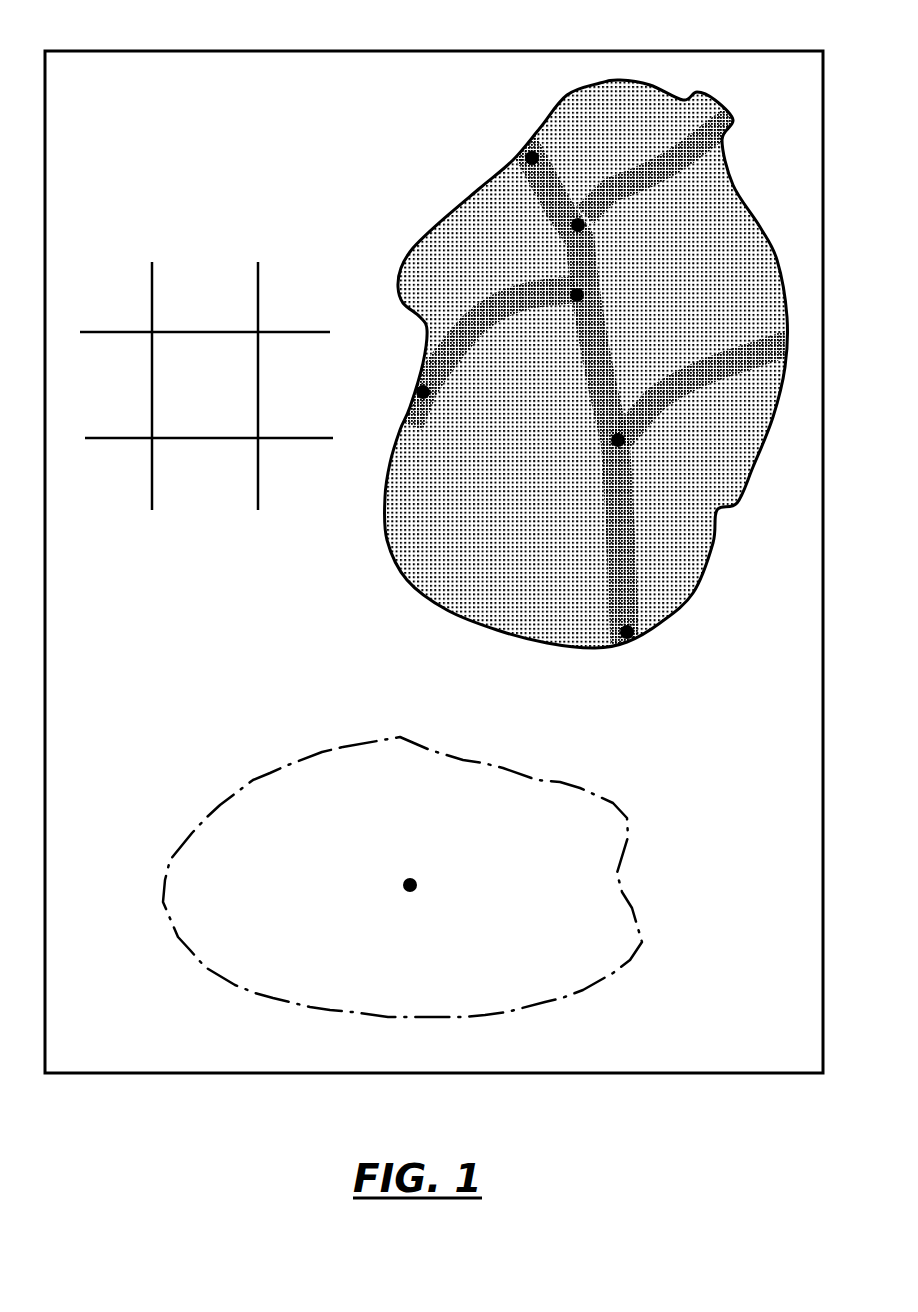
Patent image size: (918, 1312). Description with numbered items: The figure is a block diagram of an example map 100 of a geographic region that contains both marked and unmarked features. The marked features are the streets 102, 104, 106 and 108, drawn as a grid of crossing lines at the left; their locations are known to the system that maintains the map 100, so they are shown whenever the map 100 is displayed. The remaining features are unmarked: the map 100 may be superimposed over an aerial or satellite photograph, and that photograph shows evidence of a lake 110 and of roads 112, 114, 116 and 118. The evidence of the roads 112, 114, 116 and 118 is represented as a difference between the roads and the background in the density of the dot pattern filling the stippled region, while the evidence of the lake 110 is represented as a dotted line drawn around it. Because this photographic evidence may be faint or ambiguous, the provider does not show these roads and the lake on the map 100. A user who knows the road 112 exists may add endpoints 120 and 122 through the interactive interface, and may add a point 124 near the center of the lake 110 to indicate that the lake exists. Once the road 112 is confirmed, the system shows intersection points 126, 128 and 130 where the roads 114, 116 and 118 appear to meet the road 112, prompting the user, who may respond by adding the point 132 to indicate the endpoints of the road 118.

The map 100 is at (585, 51).
The street 102 is at (115, 313).
The street 104 is at (108, 450).
The street 106 is at (163, 272).
The street 108 is at (270, 297).
The lake 110 is at (540, 808).
The road 112 is at (577, 413).
The road 114 is at (663, 420).
The road 116 is at (628, 200).
The road 118 is at (533, 270).
The endpoint 120 is at (627, 638).
The endpoint 122 is at (532, 150).
The point 124 is at (412, 880).
The intersection point 126 is at (578, 225).
The intersection point 128 is at (577, 300).
The intersection point 130 is at (612, 445).
The point 132 is at (423, 385).